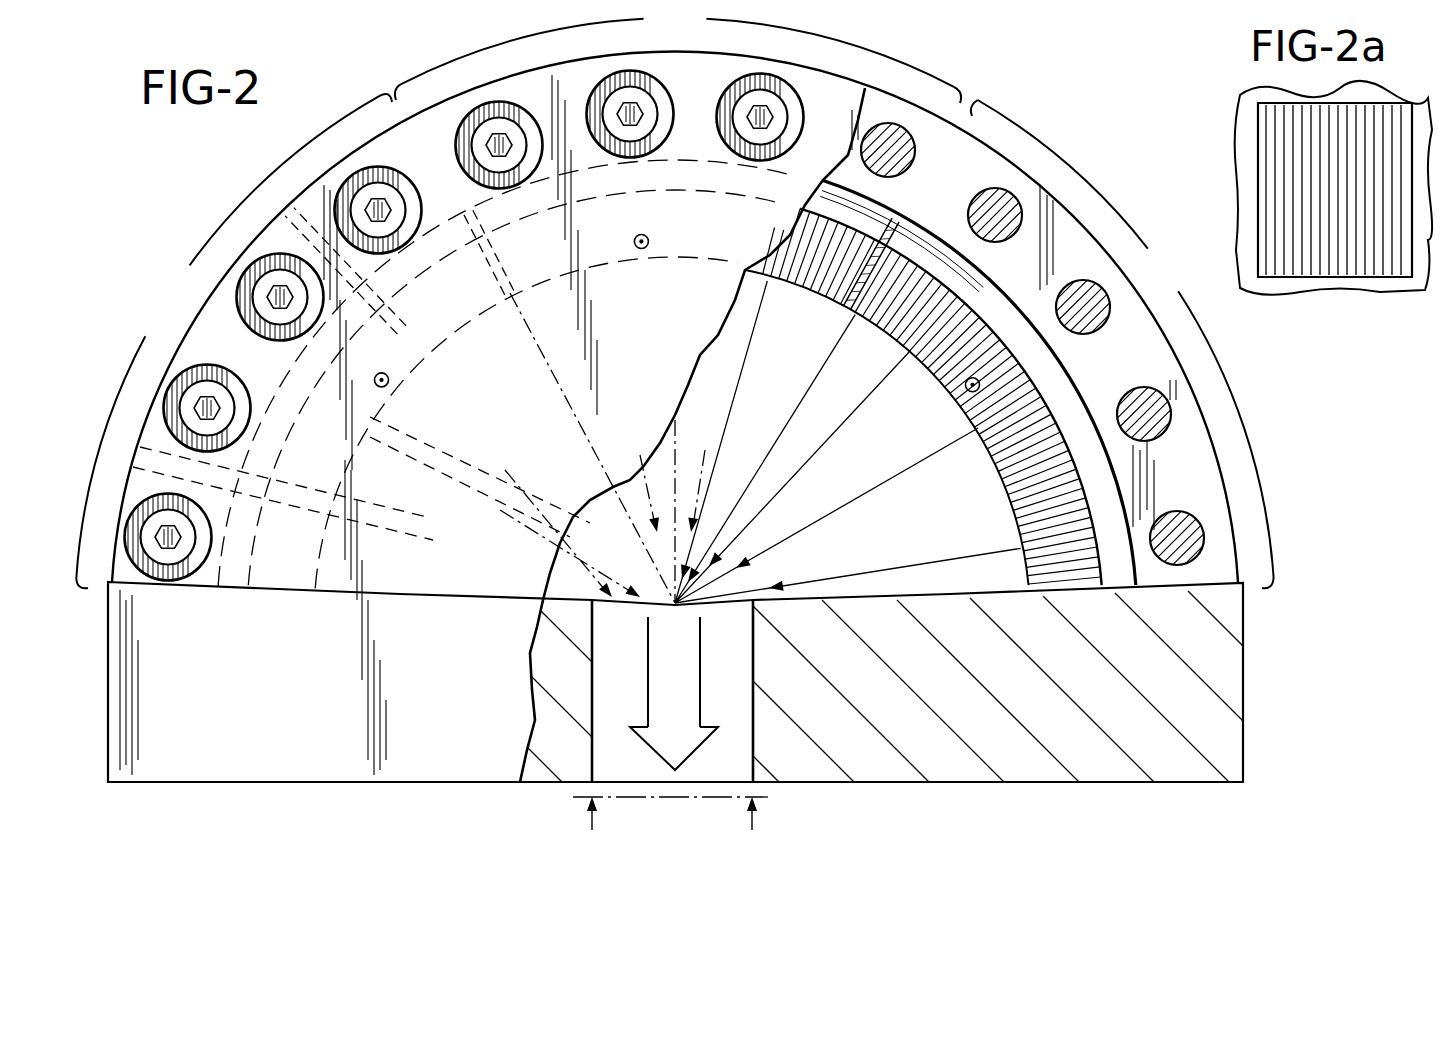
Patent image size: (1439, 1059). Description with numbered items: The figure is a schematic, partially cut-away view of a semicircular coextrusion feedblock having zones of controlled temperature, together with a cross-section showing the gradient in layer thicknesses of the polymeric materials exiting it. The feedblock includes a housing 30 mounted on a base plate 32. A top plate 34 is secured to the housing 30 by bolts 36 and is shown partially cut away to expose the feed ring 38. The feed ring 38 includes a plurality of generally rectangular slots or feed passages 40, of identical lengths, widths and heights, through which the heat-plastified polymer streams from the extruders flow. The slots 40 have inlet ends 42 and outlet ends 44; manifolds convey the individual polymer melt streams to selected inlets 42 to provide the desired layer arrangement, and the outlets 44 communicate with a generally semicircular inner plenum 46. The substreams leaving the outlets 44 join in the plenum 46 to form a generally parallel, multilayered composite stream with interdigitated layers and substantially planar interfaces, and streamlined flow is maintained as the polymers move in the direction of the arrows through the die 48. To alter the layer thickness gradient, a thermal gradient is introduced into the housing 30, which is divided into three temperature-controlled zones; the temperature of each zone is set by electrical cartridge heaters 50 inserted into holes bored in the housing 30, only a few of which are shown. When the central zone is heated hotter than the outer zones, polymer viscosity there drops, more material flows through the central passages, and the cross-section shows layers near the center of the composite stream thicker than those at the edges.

In FIG. 2, the housing 30 is at (1212, 462).
In FIG. 2, the base plate 32 is at (1210, 650).
In FIG. 2, the top plate 34 is at (487, 408).
In FIG. 2, the bolts 36 is at (500, 140).
In FIG. 2, the feed ring 38 is at (985, 305).
In FIG. 2, the feed passages 40 is at (1030, 486).
In FIG. 2, the inlet ends 42 is at (1040, 440).
In FIG. 2, the outlet ends 44 is at (850, 268).
In FIG. 2A, the outlet ends 44 is at (1327, 270).
In FIG. 2, the inner plenum 46 is at (872, 480).
In FIG. 2, the die 48 is at (725, 766).
In FIG. 2, the electrical cartridge heaters 50 is at (300, 490).